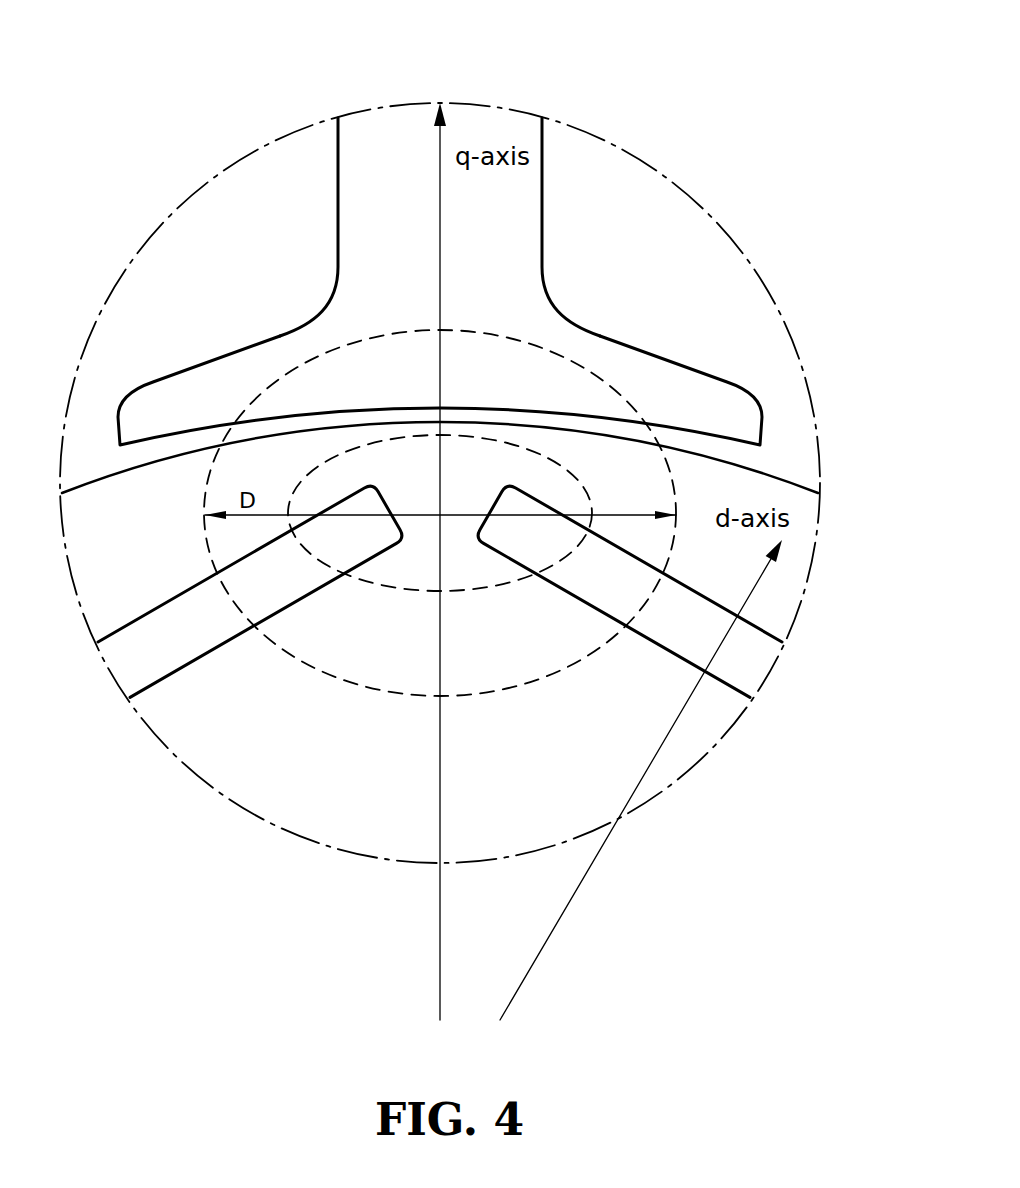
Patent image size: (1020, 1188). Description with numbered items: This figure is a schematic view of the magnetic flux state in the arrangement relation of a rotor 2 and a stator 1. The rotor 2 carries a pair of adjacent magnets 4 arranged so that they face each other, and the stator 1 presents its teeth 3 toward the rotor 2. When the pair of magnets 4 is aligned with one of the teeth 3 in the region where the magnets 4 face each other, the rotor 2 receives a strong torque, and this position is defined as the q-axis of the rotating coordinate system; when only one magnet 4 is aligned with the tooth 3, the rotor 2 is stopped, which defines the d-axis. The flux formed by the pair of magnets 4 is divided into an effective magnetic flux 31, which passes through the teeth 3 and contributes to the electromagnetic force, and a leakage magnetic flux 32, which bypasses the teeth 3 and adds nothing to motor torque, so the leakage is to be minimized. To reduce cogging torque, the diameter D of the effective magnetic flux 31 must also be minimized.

The stator 1 is at (440, 447).
The rotor 2 is at (474, 530).
The teeth 3 is at (457, 260).
The effective magnetic flux 31 is at (338, 218).
The leakage magnetic flux 32 is at (527, 187).
The magnets 4 is at (742, 653).